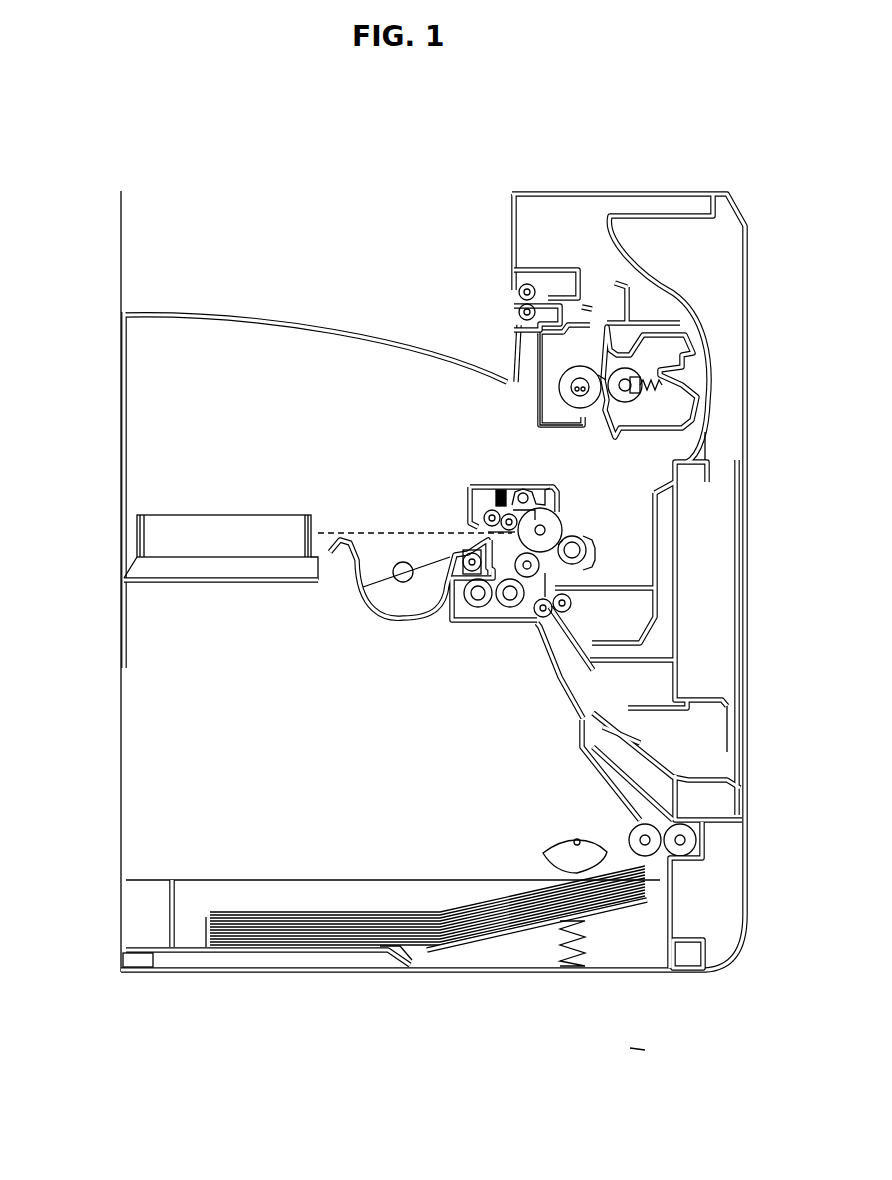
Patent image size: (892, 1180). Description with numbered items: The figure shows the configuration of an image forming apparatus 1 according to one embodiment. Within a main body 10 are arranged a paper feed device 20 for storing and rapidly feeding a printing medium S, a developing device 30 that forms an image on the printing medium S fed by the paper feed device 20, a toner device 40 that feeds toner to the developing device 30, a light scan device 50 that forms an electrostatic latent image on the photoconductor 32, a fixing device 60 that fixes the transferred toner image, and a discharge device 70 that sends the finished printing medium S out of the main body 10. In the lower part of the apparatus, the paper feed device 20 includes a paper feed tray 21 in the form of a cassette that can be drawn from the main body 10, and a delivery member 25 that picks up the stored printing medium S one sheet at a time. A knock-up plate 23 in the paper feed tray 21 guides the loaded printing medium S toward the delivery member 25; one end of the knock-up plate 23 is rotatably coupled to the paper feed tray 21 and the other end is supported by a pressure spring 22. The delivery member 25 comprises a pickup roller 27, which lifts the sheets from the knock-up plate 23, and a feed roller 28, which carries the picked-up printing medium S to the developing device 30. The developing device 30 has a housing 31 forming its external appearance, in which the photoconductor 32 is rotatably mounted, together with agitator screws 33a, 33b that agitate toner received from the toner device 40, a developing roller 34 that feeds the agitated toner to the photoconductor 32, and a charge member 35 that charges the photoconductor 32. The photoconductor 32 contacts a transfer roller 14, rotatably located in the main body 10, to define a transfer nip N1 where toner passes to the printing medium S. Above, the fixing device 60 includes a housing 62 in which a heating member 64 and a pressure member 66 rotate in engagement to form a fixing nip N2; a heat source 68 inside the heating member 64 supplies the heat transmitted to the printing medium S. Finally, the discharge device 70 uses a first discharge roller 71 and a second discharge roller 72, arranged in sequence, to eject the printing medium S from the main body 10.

The image forming apparatus 1 is at (413, 124).
The main body 10 is at (112, 358).
The transfer roller 14 is at (584, 550).
The paper feed device 20 is at (112, 910).
The paper feed tray 21 is at (392, 955).
The pressure spring 22 is at (568, 960).
The knock-up plate 23 is at (478, 952).
The delivery member 25 is at (612, 1036).
The pickup roller 27 is at (585, 862).
The feed roller 28 is at (650, 858).
The developing device 30 is at (463, 482).
The housing 31 is at (527, 492).
The photoconductor 32 is at (557, 514).
The agitator screw 33a is at (476, 608).
The agitator screw 33b is at (508, 608).
The developing roller 34 is at (540, 570).
The charge member 35 is at (490, 528).
The toner device 40 is at (376, 526).
The light scan device 50 is at (226, 508).
The fixing device 60 is at (636, 332).
The housing 62 is at (700, 330).
The heating member 64 is at (560, 388).
The pressure member 66 is at (645, 393).
The heat source 68 is at (537, 360).
The discharge device 70 is at (545, 275).
The first discharge roller 71 is at (520, 290).
The second discharge roller 72 is at (519, 312).
The transfer nip N1 is at (570, 525).
The fixing nip N2 is at (600, 355).
The printing medium S is at (373, 905).